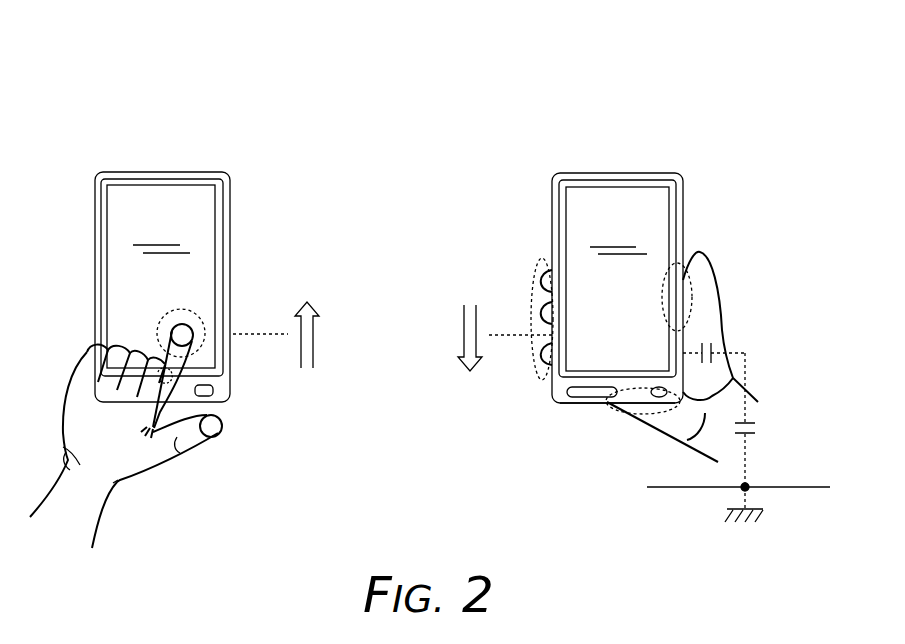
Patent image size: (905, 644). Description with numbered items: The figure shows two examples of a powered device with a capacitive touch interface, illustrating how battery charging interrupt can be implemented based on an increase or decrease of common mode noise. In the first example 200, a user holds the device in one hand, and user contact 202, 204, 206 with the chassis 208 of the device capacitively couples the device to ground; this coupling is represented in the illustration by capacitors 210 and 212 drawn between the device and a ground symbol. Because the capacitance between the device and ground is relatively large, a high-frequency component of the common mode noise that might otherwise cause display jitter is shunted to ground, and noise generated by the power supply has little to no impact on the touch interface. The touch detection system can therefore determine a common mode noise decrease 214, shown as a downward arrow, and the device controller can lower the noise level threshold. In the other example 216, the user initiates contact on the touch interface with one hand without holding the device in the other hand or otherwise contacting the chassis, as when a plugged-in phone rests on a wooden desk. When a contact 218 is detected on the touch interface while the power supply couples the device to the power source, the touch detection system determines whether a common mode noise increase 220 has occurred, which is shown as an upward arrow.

The example 200 is at (605, 80).
The user contact 202 is at (660, 413).
The user contact 204 is at (688, 262).
The user contact 206 is at (548, 262).
The chassis 208 is at (555, 404).
The capacitor 210 is at (710, 335).
The capacitor 212 is at (755, 420).
The common mode noise decrease 214 is at (454, 402).
The example 216 is at (138, 125).
The contact 218 is at (192, 318).
The common mode noise increase 220 is at (291, 402).